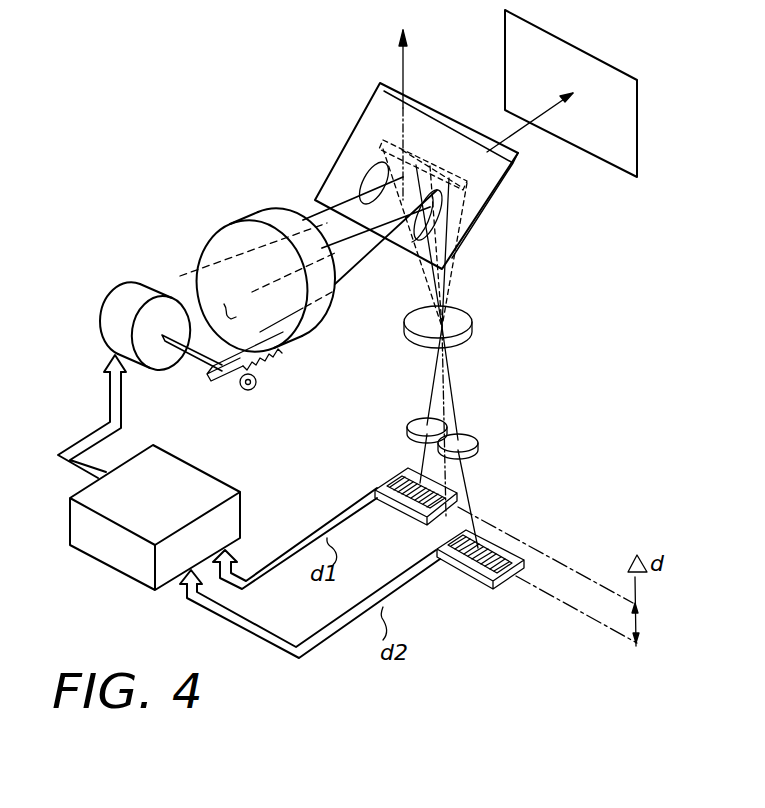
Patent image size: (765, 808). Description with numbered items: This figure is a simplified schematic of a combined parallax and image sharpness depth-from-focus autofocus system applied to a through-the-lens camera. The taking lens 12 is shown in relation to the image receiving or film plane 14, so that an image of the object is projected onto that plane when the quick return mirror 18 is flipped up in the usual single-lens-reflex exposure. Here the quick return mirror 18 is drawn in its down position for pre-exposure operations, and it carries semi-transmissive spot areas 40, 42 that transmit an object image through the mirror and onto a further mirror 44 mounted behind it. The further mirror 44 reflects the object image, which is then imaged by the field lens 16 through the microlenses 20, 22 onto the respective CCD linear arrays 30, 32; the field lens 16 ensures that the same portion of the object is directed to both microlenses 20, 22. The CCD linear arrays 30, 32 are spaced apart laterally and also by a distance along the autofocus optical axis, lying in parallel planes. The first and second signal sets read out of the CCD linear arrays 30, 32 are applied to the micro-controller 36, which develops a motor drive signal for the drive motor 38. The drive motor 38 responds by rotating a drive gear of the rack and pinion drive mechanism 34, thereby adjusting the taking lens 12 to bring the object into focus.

The taking lens 12 is at (318, 327).
The image receiving or film plane 14 is at (597, 53).
The field lens 16 is at (472, 324).
The quick return mirror 18 is at (445, 262).
The microlens 20 is at (407, 428).
The microlens 22 is at (478, 440).
The CCD linear array 30 is at (410, 512).
The CCD linear array 32 is at (482, 582).
The rack and pinion drive mechanism 34 is at (217, 377).
The micro-controller 36 is at (107, 562).
The drive motor 38 is at (124, 291).
The semi-transmissive spot area 40 is at (444, 214).
The semi-transmissive spot area 42 is at (366, 172).
The further mirror 44 is at (486, 188).